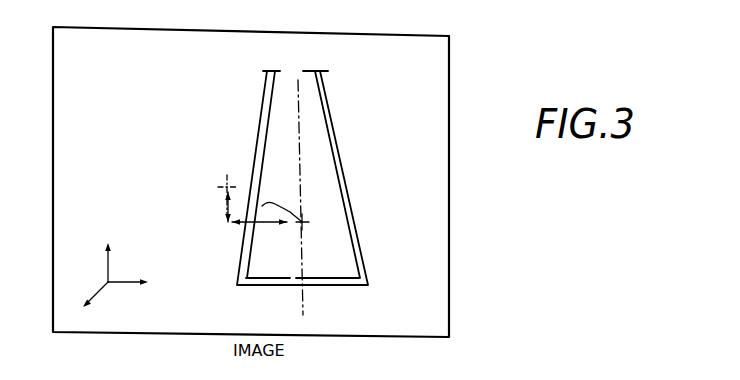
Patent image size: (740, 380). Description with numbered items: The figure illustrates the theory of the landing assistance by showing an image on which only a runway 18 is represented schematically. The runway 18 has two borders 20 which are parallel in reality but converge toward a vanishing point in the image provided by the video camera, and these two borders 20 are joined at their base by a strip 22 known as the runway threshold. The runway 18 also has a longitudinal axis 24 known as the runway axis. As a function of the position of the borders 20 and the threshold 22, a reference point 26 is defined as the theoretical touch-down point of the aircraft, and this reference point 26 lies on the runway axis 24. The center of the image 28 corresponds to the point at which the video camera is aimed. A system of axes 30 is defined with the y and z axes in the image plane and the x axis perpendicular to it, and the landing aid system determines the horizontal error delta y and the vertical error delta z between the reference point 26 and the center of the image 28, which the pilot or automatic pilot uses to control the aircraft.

The runway 18 is at (323, 157).
The runway borders 20 is at (356, 237).
The runway threshold 22 is at (329, 285).
The runway axis 24 is at (302, 301).
The reference point 26 is at (304, 220).
The center of the image 28 is at (247, 197).
The system of axes 30 is at (110, 293).